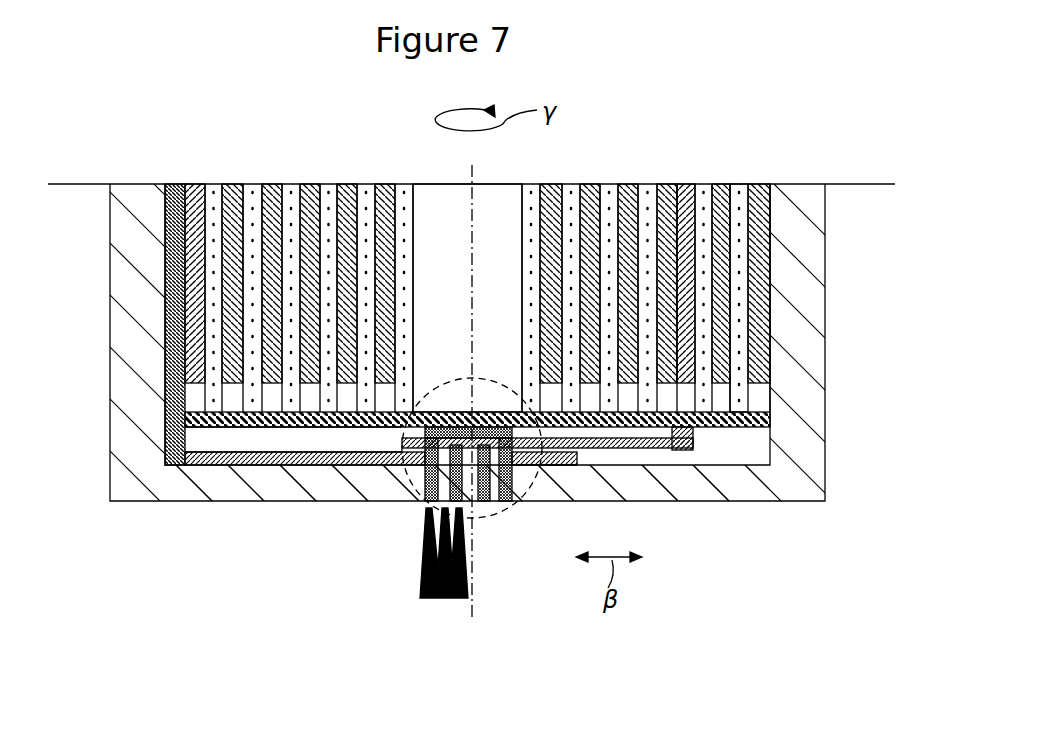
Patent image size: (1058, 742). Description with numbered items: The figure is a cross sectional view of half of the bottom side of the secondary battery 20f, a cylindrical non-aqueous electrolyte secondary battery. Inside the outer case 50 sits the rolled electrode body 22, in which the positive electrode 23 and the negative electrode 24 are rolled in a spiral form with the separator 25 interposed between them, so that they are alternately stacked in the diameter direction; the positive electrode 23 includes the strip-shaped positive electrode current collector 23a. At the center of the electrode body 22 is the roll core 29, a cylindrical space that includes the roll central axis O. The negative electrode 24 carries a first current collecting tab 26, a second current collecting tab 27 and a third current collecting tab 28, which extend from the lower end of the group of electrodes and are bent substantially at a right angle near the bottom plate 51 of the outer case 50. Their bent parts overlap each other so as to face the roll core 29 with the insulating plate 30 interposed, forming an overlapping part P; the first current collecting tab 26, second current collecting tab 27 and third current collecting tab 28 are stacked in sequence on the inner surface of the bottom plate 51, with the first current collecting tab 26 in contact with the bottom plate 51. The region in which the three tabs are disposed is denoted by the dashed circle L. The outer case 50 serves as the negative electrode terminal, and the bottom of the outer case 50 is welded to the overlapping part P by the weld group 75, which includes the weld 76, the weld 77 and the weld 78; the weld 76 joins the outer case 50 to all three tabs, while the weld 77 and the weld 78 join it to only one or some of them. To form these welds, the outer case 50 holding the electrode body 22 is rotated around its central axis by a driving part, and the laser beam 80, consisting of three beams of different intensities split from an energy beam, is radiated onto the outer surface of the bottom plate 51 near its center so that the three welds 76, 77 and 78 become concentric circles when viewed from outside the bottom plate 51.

The secondary battery 20f is at (789, 137).
The rolled electrode body 22 is at (545, 260).
The positive electrode 23 is at (725, 183).
The positive electrode current collector 23a is at (735, 239).
The negative electrode 24 is at (665, 183).
The separator 25 is at (698, 183).
The first current collecting tab 26 is at (198, 467).
The second current collecting tab 27 is at (695, 441).
The third current collecting tab 28 is at (483, 411).
The roll core 29 is at (438, 197).
The insulating plate 30 is at (238, 430).
The outer case 50 is at (828, 300).
The bottom plate 51 is at (298, 494).
The weld group 75 is at (517, 477).
The weld 76 is at (410, 474).
The weld 77 is at (486, 503).
The weld 78 is at (423, 499).
The laser beam 80 is at (447, 598).
The roll central axis O is at (474, 220).
The dashed circle L is at (446, 378).
The overlapping part P is at (560, 453).